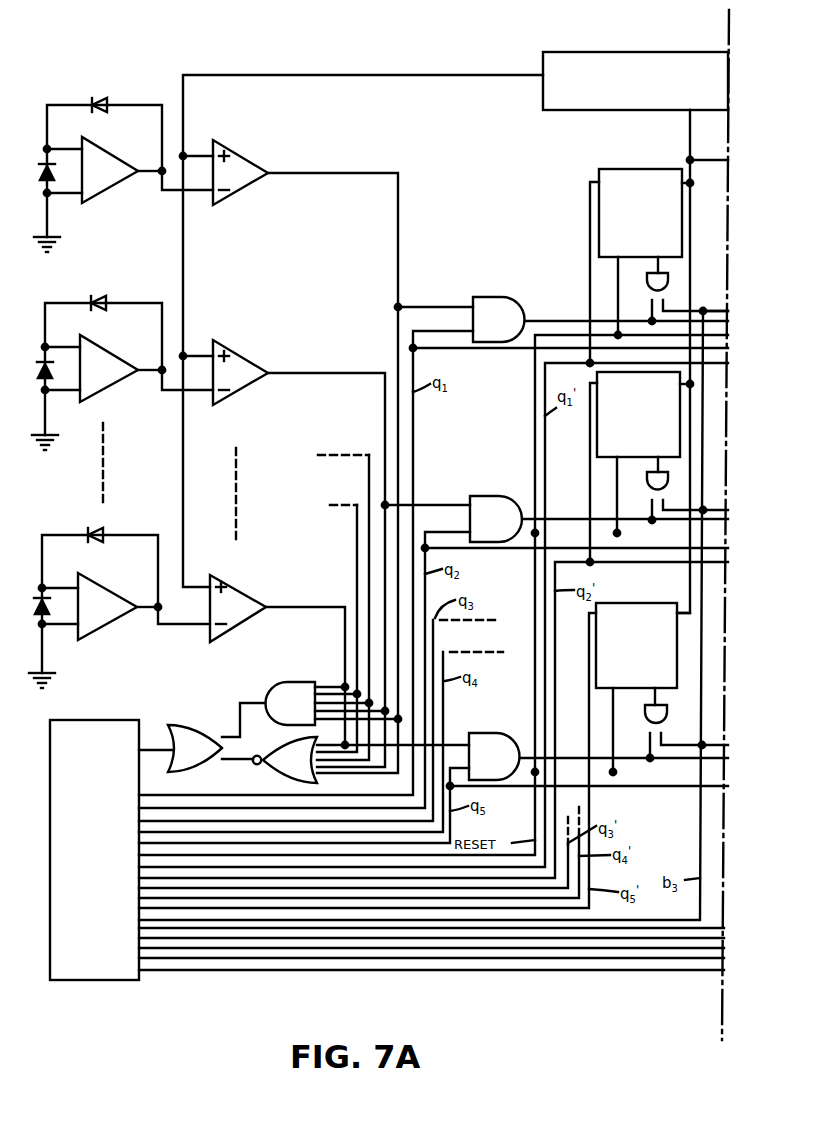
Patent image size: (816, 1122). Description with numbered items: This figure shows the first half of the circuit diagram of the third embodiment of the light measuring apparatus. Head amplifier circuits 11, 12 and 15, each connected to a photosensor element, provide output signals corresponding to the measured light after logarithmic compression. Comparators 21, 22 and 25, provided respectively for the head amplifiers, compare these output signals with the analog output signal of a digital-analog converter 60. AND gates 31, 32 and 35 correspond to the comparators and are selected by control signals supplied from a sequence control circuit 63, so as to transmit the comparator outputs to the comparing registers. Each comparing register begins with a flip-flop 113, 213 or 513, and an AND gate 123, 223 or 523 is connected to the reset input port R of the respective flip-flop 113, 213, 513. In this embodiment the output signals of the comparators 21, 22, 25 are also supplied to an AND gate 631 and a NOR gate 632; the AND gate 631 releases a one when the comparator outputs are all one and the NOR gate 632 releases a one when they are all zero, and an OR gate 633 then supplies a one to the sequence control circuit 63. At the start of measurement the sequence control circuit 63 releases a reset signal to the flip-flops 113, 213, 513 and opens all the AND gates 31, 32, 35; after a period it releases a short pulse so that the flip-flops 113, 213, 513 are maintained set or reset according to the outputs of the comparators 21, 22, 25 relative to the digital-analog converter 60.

The head amplifier circuit 11 is at (104, 193).
The head amplifier circuit 12 is at (103, 392).
The head amplifier circuit 15 is at (102, 630).
The comparator 21 is at (232, 150).
The comparator 22 is at (232, 350).
The comparator 25 is at (229, 585).
The AND gate 31 is at (491, 295).
The AND gate 32 is at (490, 494).
The AND gate 35 is at (490, 731).
The digital-analog converter 60 is at (615, 52).
The sequence control circuit 63 is at (107, 718).
The flip-flop 113 is at (631, 169).
The AND gate 123 is at (649, 276).
The flip-flop 213 is at (596, 432).
The AND gate 223 is at (648, 474).
The flip-flop 513 is at (622, 603).
The AND gate 523 is at (646, 707).
The AND gate 631 is at (308, 664).
The NOR gate 632 is at (270, 774).
The OR gate 633 is at (176, 728).